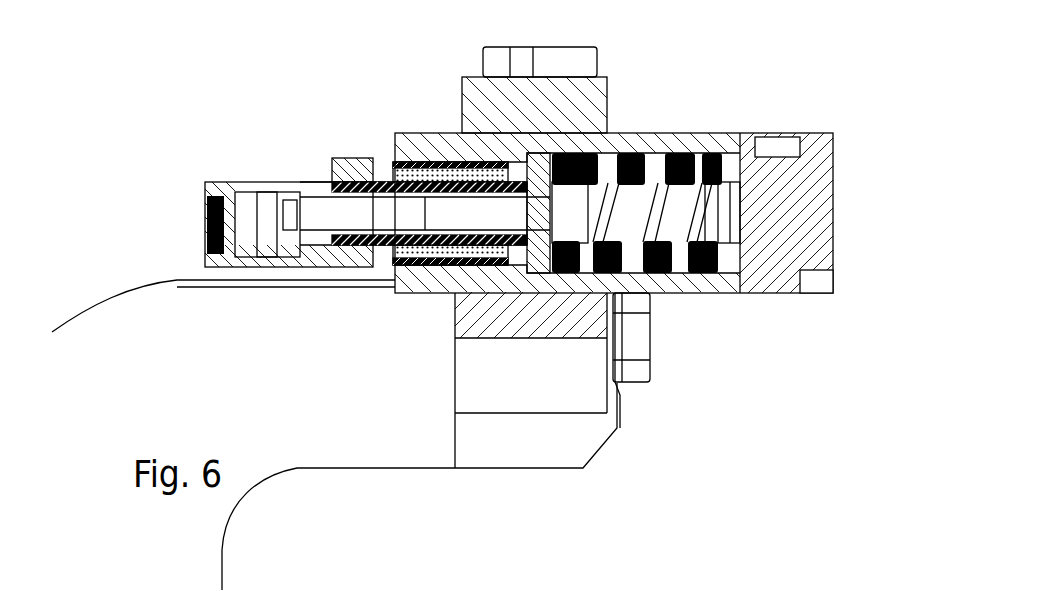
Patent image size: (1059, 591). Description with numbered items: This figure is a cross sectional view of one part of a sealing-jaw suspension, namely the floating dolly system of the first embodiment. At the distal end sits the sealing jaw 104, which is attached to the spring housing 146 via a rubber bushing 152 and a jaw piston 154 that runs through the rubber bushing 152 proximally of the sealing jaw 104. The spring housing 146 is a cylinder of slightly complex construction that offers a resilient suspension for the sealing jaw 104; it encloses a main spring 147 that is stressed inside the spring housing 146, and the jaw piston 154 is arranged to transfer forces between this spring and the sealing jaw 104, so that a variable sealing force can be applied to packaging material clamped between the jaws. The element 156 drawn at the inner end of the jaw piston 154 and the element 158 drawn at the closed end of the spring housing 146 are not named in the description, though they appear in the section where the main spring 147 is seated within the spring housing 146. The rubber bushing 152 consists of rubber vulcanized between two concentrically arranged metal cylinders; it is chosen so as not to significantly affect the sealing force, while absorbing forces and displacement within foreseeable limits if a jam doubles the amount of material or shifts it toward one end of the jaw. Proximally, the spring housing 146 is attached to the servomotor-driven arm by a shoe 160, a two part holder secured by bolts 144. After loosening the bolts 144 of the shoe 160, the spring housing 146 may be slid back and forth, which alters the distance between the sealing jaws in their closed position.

The sealing jaw 104 is at (292, 185).
The jaw piston 154 is at (315, 185).
The rubber bushing 152 is at (400, 177).
The spring housing 146 is at (763, 133).
The shoe 160 is at (590, 108).
The bolt 144 is at (568, 65).
The spring seat piston 156 is at (540, 175).
The main spring 147 is at (663, 258).
The end plug 158 is at (773, 235).